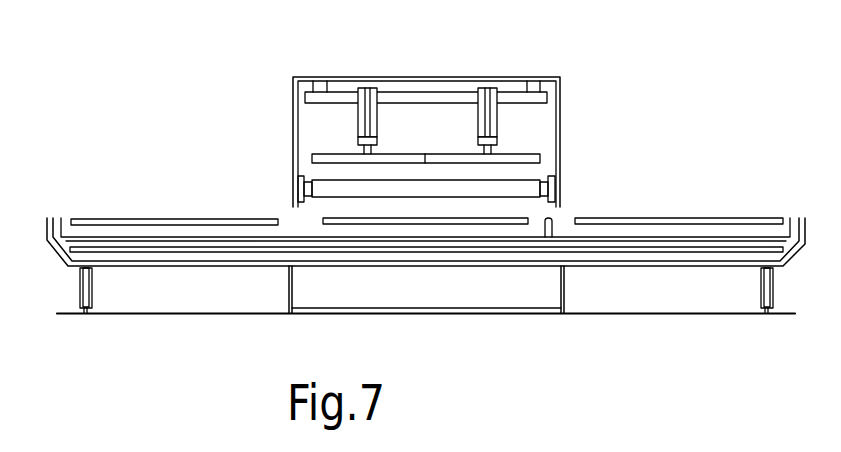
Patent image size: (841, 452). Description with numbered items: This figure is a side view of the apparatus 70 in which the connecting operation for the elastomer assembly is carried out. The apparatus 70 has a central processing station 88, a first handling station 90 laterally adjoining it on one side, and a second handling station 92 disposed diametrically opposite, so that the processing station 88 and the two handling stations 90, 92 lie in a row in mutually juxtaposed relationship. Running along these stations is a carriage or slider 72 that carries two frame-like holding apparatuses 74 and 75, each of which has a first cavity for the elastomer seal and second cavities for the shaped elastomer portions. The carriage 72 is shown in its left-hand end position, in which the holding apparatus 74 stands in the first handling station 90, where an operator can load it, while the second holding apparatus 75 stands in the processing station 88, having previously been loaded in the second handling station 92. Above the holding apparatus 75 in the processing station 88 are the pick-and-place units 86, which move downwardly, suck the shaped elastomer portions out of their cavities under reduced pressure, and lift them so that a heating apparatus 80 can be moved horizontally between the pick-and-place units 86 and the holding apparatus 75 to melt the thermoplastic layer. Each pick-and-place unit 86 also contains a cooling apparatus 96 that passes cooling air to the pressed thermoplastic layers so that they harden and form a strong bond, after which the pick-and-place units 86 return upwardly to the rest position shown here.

The apparatus 70 is at (733, 90).
The carriage 72 is at (62, 218).
The holding apparatus 74 is at (200, 200).
The holding apparatus 75 is at (520, 212).
The heating apparatus 80 is at (527, 190).
The pick-and-place units 86 is at (356, 118).
The central processing station 88 is at (554, 315).
The first handling station 90 is at (277, 317).
The second handling station 92 is at (760, 317).
The cooling apparatus 96 is at (477, 113).